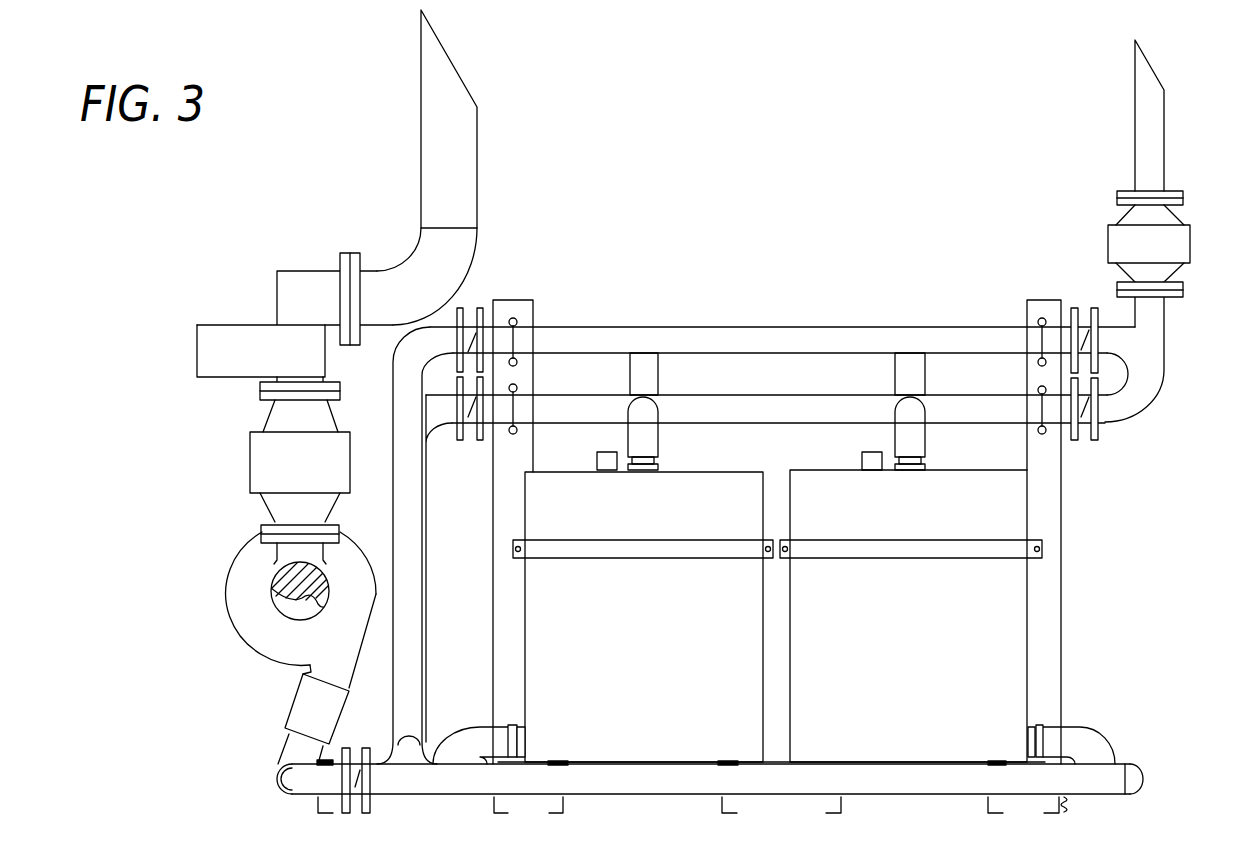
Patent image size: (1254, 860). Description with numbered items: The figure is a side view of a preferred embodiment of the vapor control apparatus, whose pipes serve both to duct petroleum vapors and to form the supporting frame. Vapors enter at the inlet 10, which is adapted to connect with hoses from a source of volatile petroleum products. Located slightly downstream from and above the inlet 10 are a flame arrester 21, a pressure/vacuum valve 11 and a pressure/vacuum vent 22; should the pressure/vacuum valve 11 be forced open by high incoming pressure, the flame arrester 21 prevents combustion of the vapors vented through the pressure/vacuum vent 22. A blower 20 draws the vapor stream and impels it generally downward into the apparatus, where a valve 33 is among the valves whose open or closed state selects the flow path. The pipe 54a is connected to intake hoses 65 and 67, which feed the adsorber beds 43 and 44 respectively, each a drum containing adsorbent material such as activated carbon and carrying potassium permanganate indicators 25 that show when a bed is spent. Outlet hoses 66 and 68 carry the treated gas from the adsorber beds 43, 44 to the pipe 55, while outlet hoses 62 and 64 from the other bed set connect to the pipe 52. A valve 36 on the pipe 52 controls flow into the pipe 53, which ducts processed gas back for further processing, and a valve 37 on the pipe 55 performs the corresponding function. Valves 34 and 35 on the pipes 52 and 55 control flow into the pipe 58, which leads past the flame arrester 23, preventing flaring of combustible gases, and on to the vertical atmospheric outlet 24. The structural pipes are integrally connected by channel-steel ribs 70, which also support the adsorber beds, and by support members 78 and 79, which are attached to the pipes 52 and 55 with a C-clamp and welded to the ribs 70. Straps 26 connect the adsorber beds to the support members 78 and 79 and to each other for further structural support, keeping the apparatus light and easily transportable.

The inlet 10 is at (297, 600).
The pressure/vacuum valve 11 is at (232, 325).
The blower 20 is at (237, 572).
The flame arrester 21 is at (250, 462).
The pressure/vacuum vent 22 is at (477, 170).
The flame arrester 23 is at (1192, 242).
The outlet 24 is at (1165, 142).
The potassium permanganate indicators 25 is at (597, 457).
The straps 26 is at (693, 560).
The valve 33 is at (357, 748).
The valve 34 is at (1083, 306).
The valve 35 is at (1080, 438).
The valve 36 is at (470, 304).
The valve 37 is at (470, 442).
The adsorber bed 43 is at (562, 583).
The adsorber bed 44 is at (985, 592).
The pipe 52 is at (778, 326).
The pipe 53 is at (390, 352).
The pipe 54a is at (580, 782).
The pipe 55 is at (728, 393).
The pipe 58 is at (1163, 390).
The outlet hose 62 is at (660, 388).
The outlet hose 64 is at (927, 385).
The intake hose 65 is at (483, 732).
The outlet hose 66 is at (660, 456).
The intake hose 67 is at (1087, 727).
The outlet hose 68 is at (927, 456).
The ribs 70 is at (567, 808).
The support member 78 is at (1061, 568).
The support member 79 is at (490, 580).